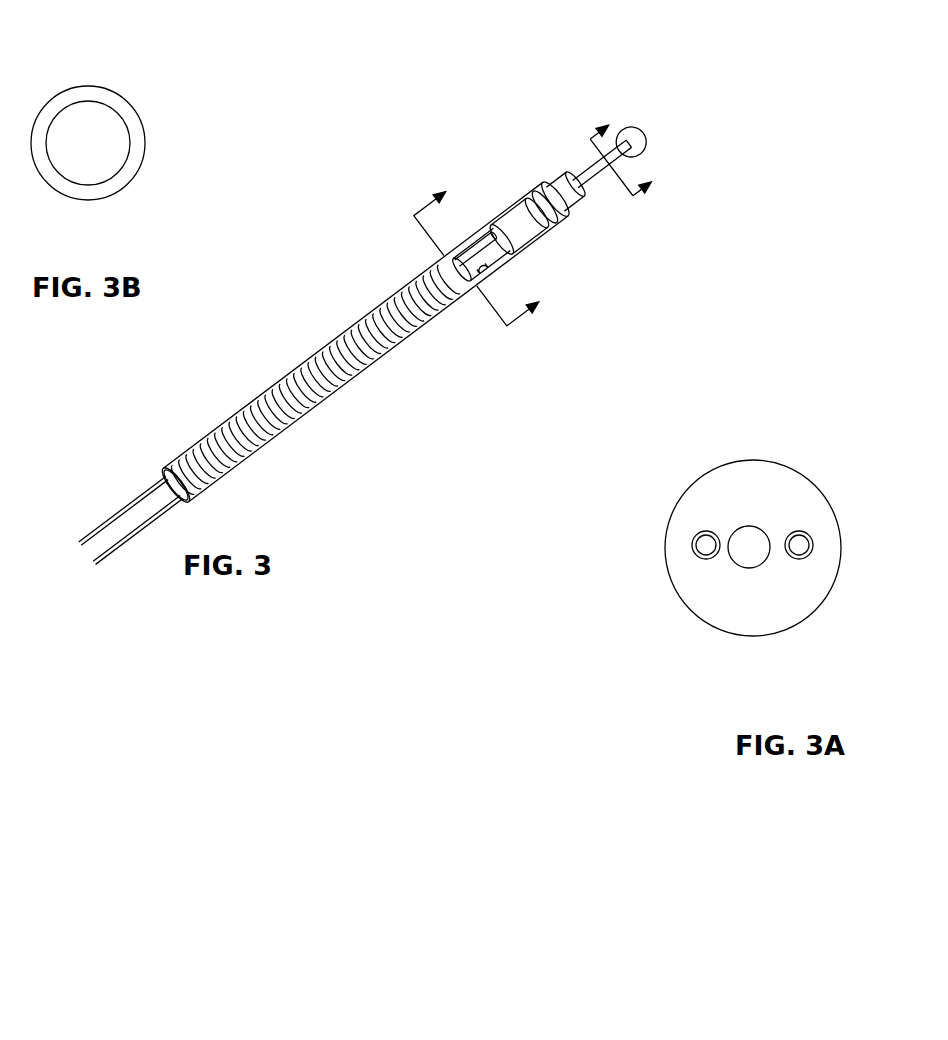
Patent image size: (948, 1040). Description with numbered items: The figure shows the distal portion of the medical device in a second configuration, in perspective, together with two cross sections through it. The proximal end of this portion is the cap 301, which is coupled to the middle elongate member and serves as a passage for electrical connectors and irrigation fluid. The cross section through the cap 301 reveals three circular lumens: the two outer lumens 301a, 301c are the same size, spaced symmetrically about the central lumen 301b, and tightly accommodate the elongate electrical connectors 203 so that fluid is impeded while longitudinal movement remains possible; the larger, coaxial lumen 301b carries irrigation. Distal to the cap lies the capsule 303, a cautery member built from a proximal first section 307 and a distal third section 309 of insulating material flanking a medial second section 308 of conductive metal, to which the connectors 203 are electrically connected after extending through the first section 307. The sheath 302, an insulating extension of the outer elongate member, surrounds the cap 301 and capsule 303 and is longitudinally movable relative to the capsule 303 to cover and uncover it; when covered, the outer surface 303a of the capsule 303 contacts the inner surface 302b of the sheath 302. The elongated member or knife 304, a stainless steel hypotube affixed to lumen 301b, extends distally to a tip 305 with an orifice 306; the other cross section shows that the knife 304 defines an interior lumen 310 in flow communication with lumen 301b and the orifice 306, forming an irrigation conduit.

In FIG. 3A, the elongate electrical connectors 203 is at (698, 541).
In FIG. 3, the cap 301 is at (458, 283).
In FIG. 3A, the cap 301 is at (768, 478).
In FIG. 3A, the lumen 301a is at (695, 555).
In FIG. 3A, the lumen 301b is at (752, 565).
In FIG. 3A, the lumen 301c is at (805, 532).
In FIG. 3, the sheath 302 is at (530, 248).
In FIG. 3, the inner surface 302b is at (513, 258).
In FIG. 3, the capsule 303 is at (505, 180).
In FIG. 3, the outer surface 303a is at (527, 185).
In FIG. 3, the elongated member or knife 304 is at (578, 190).
In FIG. 3B, the elongated member or knife 304 is at (127, 110).
In FIG. 3, the tip 305 is at (627, 126).
In FIG. 3, the orifice 306 is at (638, 132).
In FIG. 3, the first section 307 is at (470, 242).
In FIG. 3, the second section 308 is at (528, 232).
In FIG. 3, the third section 309 is at (552, 214).
In FIG. 3B, the interior lumen 310 is at (87, 157).